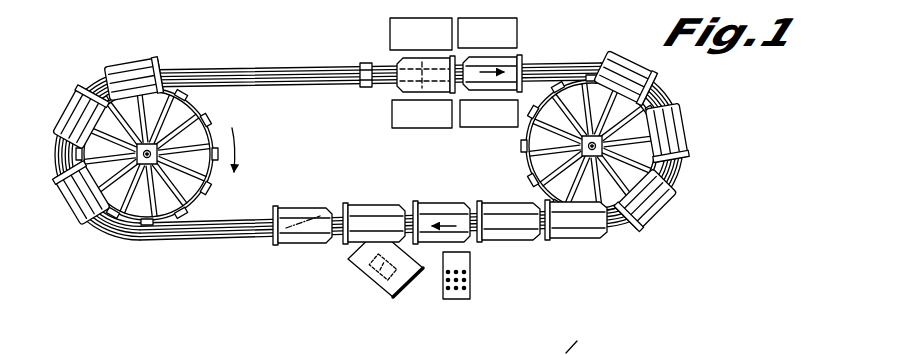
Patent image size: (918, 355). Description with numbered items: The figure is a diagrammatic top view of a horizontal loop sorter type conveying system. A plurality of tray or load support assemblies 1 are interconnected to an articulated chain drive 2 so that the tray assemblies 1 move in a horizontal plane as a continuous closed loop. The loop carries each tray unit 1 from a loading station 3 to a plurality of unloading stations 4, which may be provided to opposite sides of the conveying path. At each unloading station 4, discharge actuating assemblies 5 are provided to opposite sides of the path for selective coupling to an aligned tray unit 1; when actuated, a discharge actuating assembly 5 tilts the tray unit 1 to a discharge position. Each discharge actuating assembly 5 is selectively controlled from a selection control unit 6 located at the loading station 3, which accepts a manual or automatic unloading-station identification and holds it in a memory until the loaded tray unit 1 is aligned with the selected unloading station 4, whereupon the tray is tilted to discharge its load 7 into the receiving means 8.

The tray or load support assembly 1 is at (496, 98).
The articulated chain drive 2 is at (168, 226).
The loading station 3 is at (428, 292).
The unloading station 4 is at (369, 151).
The discharge actuating assembly 5 is at (359, 66).
The selection control unit 6 is at (472, 278).
The load 7 is at (420, 62).
The receiving means 8 is at (439, 42).